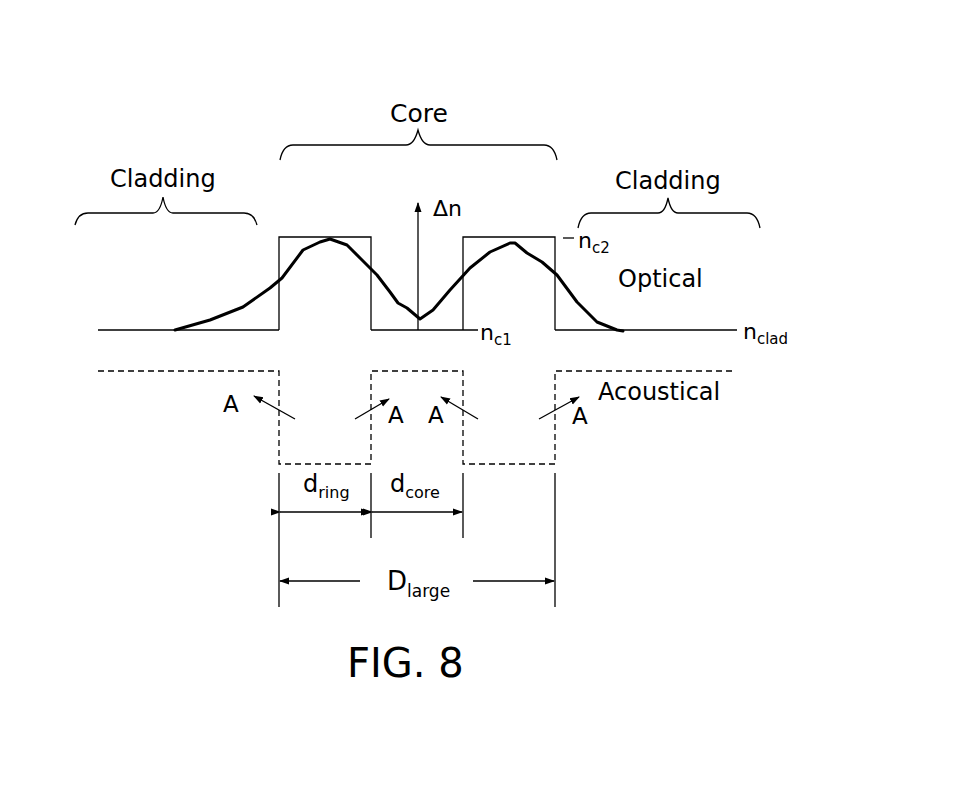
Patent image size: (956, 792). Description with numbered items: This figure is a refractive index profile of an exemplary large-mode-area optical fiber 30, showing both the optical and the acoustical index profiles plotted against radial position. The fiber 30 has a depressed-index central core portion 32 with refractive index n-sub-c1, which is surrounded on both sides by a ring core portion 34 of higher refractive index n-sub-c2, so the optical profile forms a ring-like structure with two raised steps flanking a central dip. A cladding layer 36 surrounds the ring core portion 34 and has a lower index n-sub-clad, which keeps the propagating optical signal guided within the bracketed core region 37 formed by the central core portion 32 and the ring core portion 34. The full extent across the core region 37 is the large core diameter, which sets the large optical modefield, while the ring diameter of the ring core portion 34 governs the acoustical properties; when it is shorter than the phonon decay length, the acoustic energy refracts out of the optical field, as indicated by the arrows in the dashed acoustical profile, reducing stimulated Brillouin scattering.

The optical fiber 30 is at (628, 465).
The central core portion 32 is at (438, 262).
The ring core portion 34 is at (290, 247).
The cladding layer 36 is at (135, 310).
The core region 37 is at (418, 95).